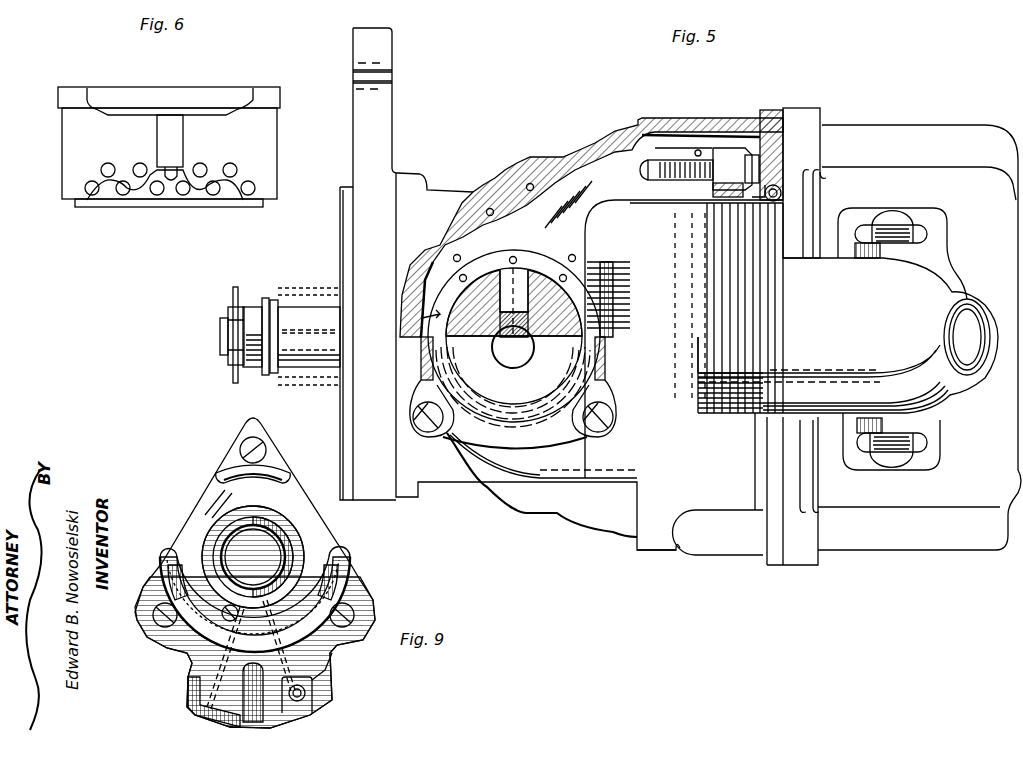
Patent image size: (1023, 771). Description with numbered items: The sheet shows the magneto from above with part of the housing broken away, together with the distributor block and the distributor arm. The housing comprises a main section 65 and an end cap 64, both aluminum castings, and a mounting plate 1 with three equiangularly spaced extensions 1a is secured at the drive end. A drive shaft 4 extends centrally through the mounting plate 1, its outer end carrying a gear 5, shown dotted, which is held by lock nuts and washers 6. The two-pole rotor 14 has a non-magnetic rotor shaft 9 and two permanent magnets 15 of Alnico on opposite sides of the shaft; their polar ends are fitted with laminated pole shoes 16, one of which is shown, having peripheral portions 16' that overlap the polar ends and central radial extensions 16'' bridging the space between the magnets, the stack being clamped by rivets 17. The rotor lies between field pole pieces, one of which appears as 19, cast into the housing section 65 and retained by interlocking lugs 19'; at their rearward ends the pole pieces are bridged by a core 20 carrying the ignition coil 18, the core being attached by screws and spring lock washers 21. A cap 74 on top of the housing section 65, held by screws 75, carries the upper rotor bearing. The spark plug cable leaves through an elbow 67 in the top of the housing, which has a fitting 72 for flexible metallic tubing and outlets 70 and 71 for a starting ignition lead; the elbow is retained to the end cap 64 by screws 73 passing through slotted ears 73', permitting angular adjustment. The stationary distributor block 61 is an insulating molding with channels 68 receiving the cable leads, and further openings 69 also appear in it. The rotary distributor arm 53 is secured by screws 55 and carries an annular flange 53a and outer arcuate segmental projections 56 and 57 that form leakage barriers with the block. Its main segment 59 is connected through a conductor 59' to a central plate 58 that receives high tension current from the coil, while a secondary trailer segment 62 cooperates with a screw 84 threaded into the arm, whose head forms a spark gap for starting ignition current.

In FIG. 5, the mounting plate 1 is at (394, 175).
In FIG. 5, the extensions 1a is at (368, 42).
In FIG. 5, the drive shaft 4 is at (290, 362).
In FIG. 5, the gear 5 is at (308, 297).
In FIG. 5, the lock nuts and washers 6 is at (256, 313).
In FIG. 5, the rotor shaft 9 is at (513, 347).
In FIG. 5, the rotor 14 is at (408, 312).
In FIG. 5, the permanent magnets 15 is at (427, 266).
In FIG. 5, the pole shoes 16 is at (514, 313).
In FIG. 5, the peripheral portions 16' is at (535, 250).
In FIG. 5, the central radial extensions 16'' is at (491, 314).
In FIG. 5, the rivets 17 is at (515, 259).
In FIG. 5, the ignition coil 18 is at (767, 290).
In FIG. 5, the field pole piece 19 is at (591, 227).
In FIG. 5, the lugs 19' is at (506, 182).
In FIG. 5, the core 20 is at (723, 152).
In FIG. 5, the screws and spring lock washers 21 is at (758, 145).
In FIG. 6, the distributor block 61 is at (263, 170).
In FIG. 5, the end cap 64 is at (1018, 285).
In FIG. 5, the main housing section 65 is at (617, 530).
In FIG. 5, the elbow 67 is at (940, 410).
In FIG. 6, the channels 68 is at (230, 178).
In FIG. 6, the lower orifices 69 is at (157, 196).
In FIG. 5, the outlet 70 is at (955, 334).
In FIG. 5, the outlet 71 is at (893, 246).
In FIG. 5, the fitting 72 is at (712, 390).
In FIG. 5, the screws 73 is at (910, 341).
In FIG. 5, the ears 73' is at (922, 344).
In FIG. 5, the cap 74 is at (560, 412).
In FIG. 5, the screws 75 is at (437, 440).
In FIG. 9, the rotary arm 53 is at (212, 490).
In FIG. 9, the annular flange 53a is at (220, 522).
In FIG. 9, the screws 55 is at (258, 446).
In FIG. 9, the arcuate segmental projection 56 is at (226, 470).
In FIG. 9, the arcuate segmental projection 57 is at (345, 582).
In FIG. 9, the central plate 58 is at (262, 555).
In FIG. 9, the main segment 59 is at (327, 687).
In FIG. 9, the conductor 59' is at (337, 663).
In FIG. 9, the trailer segment 62 is at (192, 703).
In FIG. 9, the screw 84 is at (170, 558).